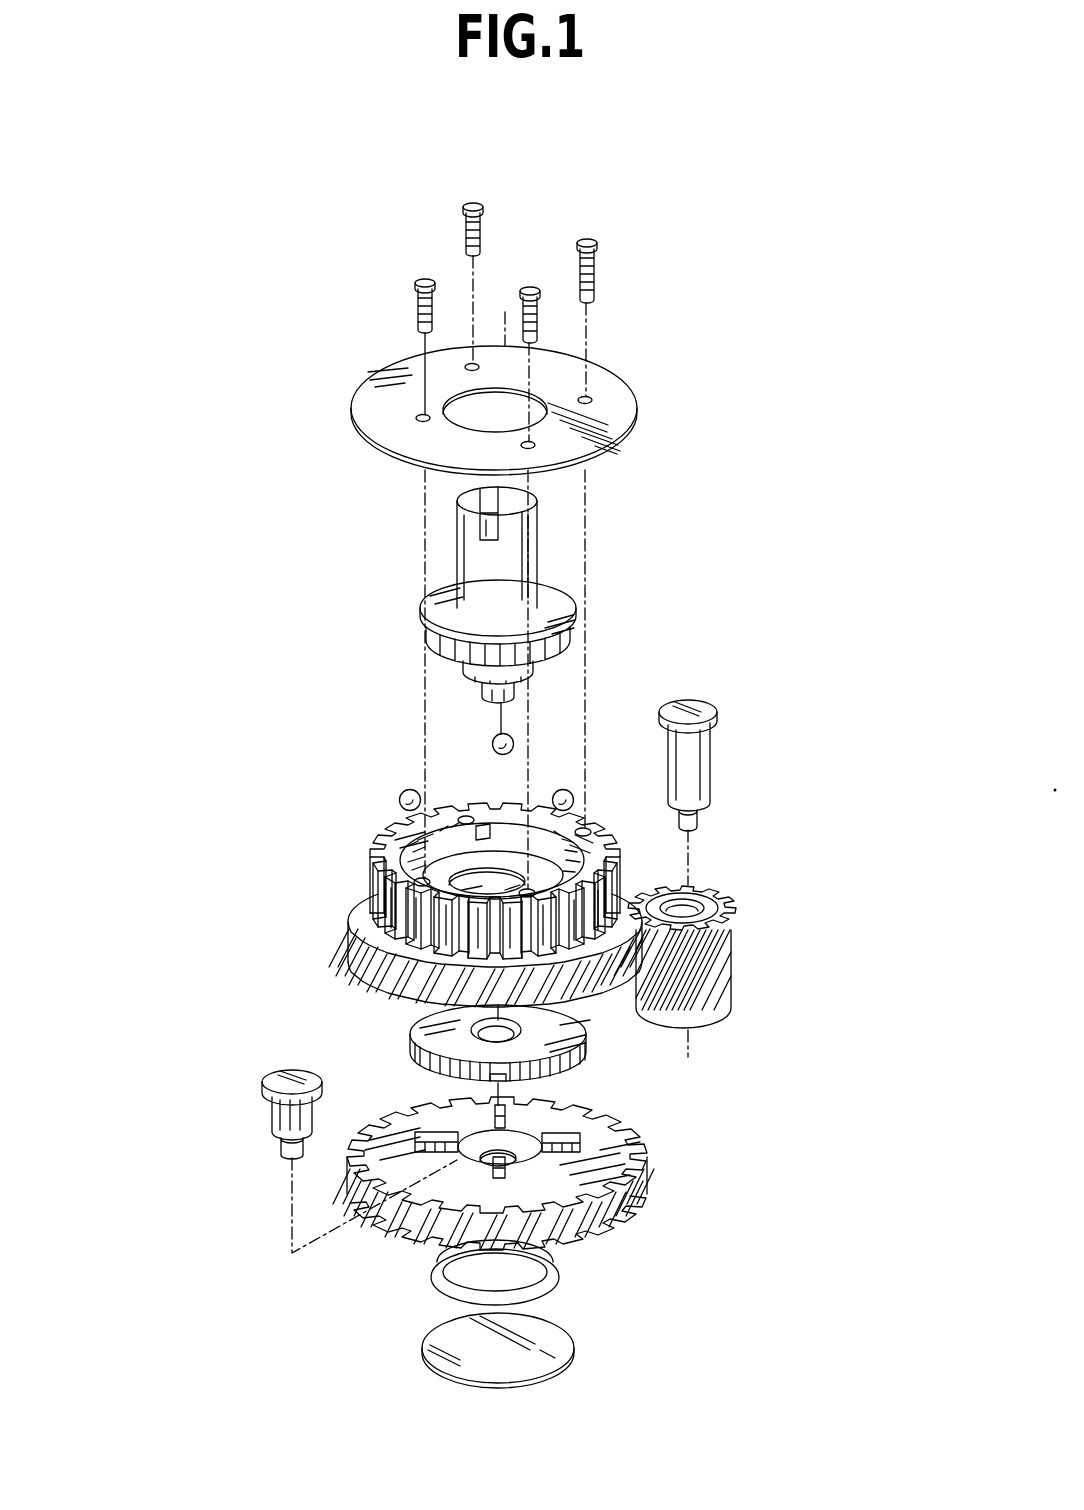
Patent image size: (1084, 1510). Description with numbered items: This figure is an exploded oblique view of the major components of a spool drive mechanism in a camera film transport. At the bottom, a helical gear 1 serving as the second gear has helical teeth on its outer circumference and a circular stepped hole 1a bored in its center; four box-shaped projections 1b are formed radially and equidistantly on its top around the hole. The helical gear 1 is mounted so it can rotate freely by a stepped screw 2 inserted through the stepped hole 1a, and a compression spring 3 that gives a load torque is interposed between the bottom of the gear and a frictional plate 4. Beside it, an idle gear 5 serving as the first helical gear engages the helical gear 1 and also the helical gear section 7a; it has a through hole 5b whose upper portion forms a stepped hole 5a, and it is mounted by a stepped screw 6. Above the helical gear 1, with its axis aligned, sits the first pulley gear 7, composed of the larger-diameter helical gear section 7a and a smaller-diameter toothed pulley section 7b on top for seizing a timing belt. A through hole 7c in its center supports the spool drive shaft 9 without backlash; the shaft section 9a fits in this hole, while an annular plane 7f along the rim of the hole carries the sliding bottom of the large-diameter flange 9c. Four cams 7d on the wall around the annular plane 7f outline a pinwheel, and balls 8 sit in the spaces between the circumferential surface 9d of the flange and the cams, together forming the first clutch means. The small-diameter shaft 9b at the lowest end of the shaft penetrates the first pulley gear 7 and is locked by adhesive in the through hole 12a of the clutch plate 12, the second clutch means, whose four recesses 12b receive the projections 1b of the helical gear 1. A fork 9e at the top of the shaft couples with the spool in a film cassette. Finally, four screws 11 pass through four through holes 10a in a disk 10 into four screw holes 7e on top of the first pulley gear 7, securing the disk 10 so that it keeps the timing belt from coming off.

The helical gear 1 is at (541, 1183).
The stepped hole 1a is at (536, 1133).
The projections 1b is at (427, 1133).
The stepped screw 2 is at (270, 1110).
The compression spring 3 is at (560, 1275).
The frictional plate 4 is at (540, 1352).
The idle gear 5 is at (718, 916).
The stepped hole 5a is at (707, 893).
The through hole 5b is at (678, 893).
The stepped screw 6 is at (690, 762).
The first pulley gear 7 is at (484, 825).
The helical gear section 7a is at (352, 966).
The pulley section 7b is at (368, 845).
The through hole 7c is at (521, 882).
The cams 7d is at (511, 833).
The screw holes 7e is at (467, 815).
The annular plane 7f is at (397, 832).
The balls 8 is at (498, 736).
The spool drive shaft 9 is at (490, 602).
The shaft section 9a is at (508, 672).
The small-diameter shaft 9b is at (480, 690).
The large-diameter flange 9c is at (553, 602).
The circumferential surface 9d is at (447, 640).
The fork 9e is at (485, 487).
The disk 10 is at (474, 422).
The through holes 10a is at (416, 418).
The screws 11 is at (415, 300).
The clutch plate 12 is at (491, 1042).
The through hole 12a is at (587, 1058).
The recesses 12b is at (460, 1073).